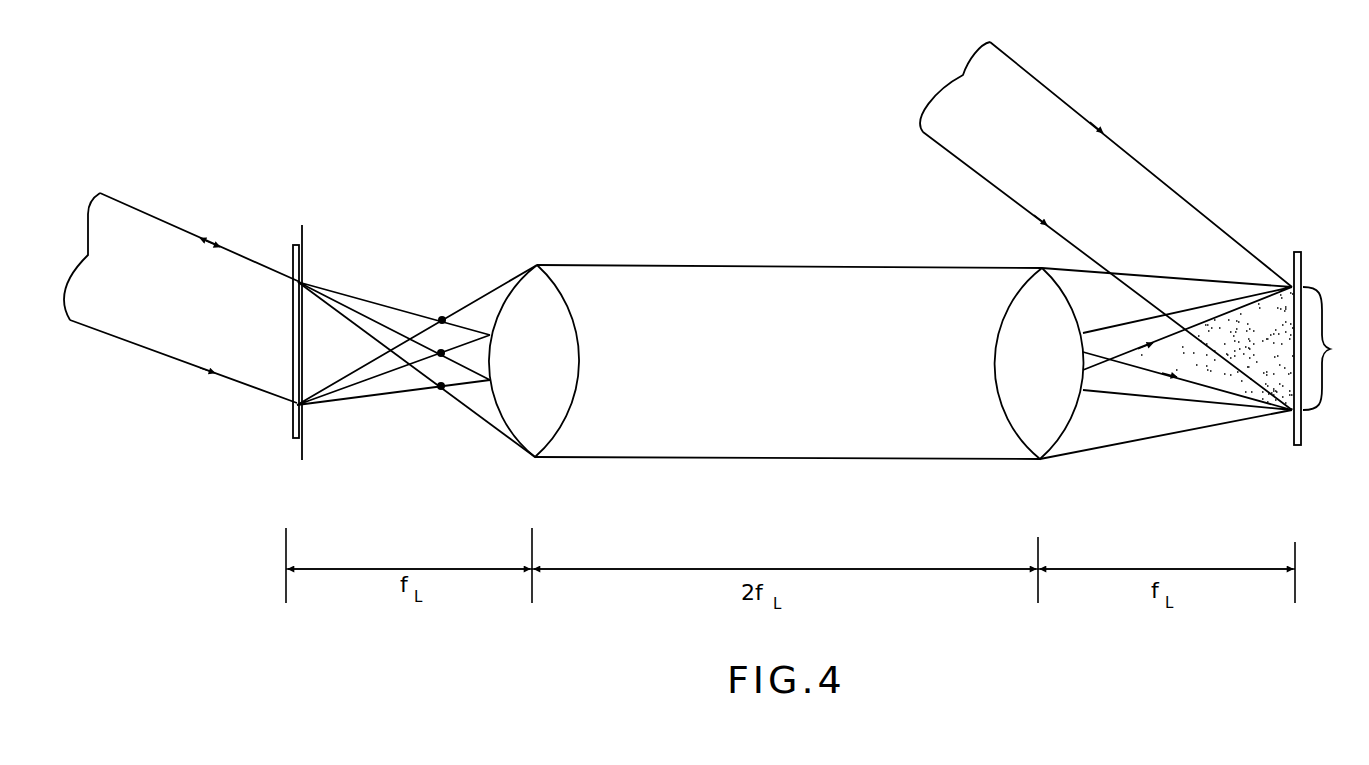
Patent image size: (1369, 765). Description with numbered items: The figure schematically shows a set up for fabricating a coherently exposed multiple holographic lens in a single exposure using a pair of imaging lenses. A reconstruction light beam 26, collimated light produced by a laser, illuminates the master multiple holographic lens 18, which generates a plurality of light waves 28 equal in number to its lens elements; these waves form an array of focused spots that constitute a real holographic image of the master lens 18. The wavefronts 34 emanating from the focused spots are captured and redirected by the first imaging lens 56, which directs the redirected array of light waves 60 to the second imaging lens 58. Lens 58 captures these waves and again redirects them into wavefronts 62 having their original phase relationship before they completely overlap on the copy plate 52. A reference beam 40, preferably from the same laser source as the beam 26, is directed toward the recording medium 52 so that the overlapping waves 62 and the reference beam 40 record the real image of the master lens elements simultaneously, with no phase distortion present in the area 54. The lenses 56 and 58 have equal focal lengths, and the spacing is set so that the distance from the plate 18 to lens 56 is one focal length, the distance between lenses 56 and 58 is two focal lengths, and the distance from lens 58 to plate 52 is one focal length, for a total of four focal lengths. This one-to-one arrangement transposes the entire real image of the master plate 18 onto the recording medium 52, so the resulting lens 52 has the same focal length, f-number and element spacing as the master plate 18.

The master multiple holographic lens 18 is at (288, 420).
The reconstruction light beam 26 is at (122, 342).
The plurality of light waves 28 is at (362, 289).
The array of light beams 34 is at (486, 427).
The reference beam 40 is at (1043, 83).
The copy plate 52 is at (1303, 259).
The area of the holographic recording medium 54 is at (1250, 348).
The first imaging lens 56 is at (537, 265).
The second imaging lens 58 is at (1042, 268).
The redirected array of light waves 60 is at (788, 462).
The wavefronts 62 is at (1177, 446).